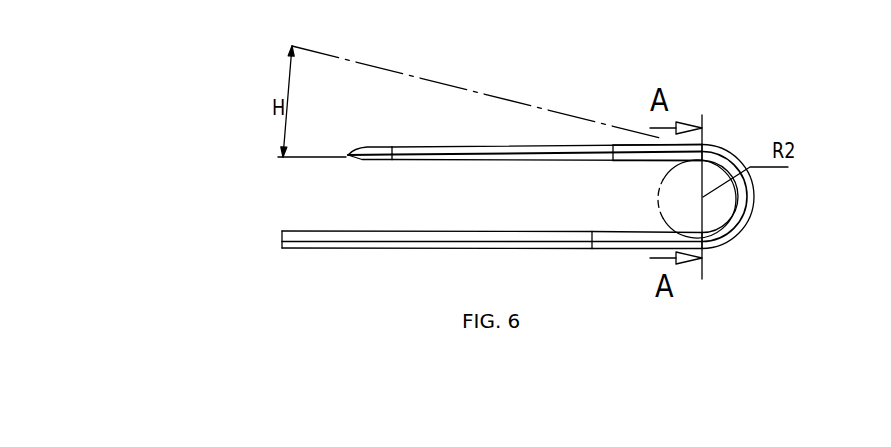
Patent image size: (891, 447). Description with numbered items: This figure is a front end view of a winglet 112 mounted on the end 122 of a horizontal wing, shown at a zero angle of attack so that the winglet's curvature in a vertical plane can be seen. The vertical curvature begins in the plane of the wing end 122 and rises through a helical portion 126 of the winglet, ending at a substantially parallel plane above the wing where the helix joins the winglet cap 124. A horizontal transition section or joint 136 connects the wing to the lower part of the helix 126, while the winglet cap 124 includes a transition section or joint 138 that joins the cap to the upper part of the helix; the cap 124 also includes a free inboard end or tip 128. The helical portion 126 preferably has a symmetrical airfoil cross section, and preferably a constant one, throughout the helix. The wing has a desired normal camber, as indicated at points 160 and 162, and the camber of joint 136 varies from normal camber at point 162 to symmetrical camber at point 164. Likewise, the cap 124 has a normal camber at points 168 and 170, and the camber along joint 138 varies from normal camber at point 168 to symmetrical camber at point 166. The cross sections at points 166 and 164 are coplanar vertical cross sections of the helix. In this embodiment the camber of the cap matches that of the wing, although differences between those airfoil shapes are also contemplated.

The winglet 112 is at (653, 72).
The wing end 122 is at (535, 249).
The winglet cap 124 is at (474, 143).
The helical portion 126 is at (744, 232).
The free inboard end or tip 128 is at (357, 154).
The horizontal transition section or joint 136 is at (623, 249).
The transition section or joint 138 is at (645, 162).
The point of normal wing camber 160 is at (281, 238).
The point of normal camber at joint 136 162 is at (592, 230).
The point of symmetrical camber at joint 136 164 is at (704, 250).
The point of symmetrical camber at joint 138 166 is at (702, 146).
The point of normal camber at joint 138 168 is at (612, 161).
The point of normal cap camber 170 is at (393, 160).